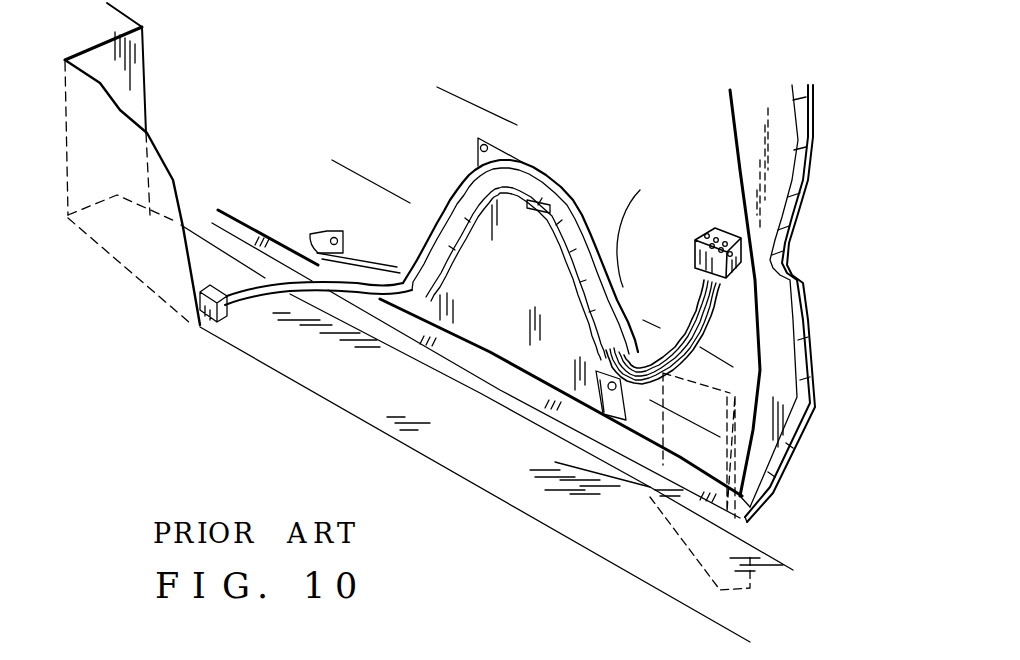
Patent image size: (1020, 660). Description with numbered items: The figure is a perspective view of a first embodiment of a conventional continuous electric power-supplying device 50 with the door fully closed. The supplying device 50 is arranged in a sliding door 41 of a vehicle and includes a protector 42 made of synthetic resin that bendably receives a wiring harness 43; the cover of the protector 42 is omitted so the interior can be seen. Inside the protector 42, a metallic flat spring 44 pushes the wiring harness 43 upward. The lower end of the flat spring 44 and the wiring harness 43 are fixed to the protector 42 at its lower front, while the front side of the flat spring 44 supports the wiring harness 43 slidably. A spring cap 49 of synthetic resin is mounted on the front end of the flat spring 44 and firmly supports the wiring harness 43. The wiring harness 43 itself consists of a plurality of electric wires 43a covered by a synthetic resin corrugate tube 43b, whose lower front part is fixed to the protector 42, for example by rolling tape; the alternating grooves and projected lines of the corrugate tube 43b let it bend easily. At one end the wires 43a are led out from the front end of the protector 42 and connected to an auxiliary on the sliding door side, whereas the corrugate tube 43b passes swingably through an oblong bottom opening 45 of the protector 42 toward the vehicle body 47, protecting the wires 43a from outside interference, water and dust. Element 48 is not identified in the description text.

The sliding door 41 is at (817, 403).
The protector 42 is at (565, 190).
The wiring harness 43 is at (463, 213).
The electric wires 43a is at (680, 317).
The corrugate tube 43b is at (747, 233).
The flat spring 44 is at (583, 257).
The oblong bottom opening 45 is at (500, 360).
The vehicle body 47 is at (148, 83).
The floor panel 48 is at (330, 362).
The spring cap 49 is at (533, 208).
The supplying device 50 is at (547, 157).